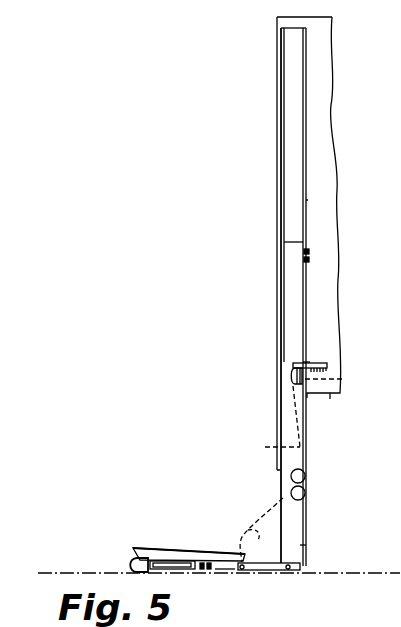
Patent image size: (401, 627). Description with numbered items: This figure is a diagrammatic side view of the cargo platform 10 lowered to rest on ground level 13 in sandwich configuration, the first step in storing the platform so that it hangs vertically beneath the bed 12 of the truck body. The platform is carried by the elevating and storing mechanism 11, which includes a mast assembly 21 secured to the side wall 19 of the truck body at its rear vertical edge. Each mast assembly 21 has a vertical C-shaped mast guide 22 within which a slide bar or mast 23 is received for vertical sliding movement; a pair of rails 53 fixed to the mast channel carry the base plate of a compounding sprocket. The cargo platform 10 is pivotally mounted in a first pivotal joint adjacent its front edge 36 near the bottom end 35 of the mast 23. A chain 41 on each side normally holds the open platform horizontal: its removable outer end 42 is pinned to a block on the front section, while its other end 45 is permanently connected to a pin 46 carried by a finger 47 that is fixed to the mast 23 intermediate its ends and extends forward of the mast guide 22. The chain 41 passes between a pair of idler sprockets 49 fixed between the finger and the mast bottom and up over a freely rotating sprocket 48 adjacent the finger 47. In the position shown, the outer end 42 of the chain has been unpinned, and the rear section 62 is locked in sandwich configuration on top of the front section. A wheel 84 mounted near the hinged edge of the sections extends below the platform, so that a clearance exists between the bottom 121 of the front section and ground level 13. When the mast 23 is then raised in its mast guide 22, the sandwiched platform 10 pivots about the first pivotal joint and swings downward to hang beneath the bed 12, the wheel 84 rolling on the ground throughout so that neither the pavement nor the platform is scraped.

The cargo platform 10 is at (137, 520).
The elevating and storing mechanism 11 is at (262, 340).
The bed 12 is at (330, 399).
The ground level 13 is at (66, 572).
The side wall 19 is at (330, 140).
The mast assembly 21 is at (307, 197).
The mast guide 22 is at (305, 108).
The mast 23 is at (292, 290).
The bottom end 35 is at (306, 545).
The front edge 36 is at (300, 566).
The chain 41 is at (271, 421).
The outer end 42 is at (262, 538).
The other end 45 is at (343, 379).
The pin 46 is at (325, 367).
The finger 47 is at (308, 362).
The sprocket 48 is at (291, 378).
The idler sprockets 49 is at (306, 484).
The rails 53 is at (308, 249).
The rear section 62 is at (186, 552).
The wheel 84 is at (130, 566).
The bottom 121 is at (226, 571).